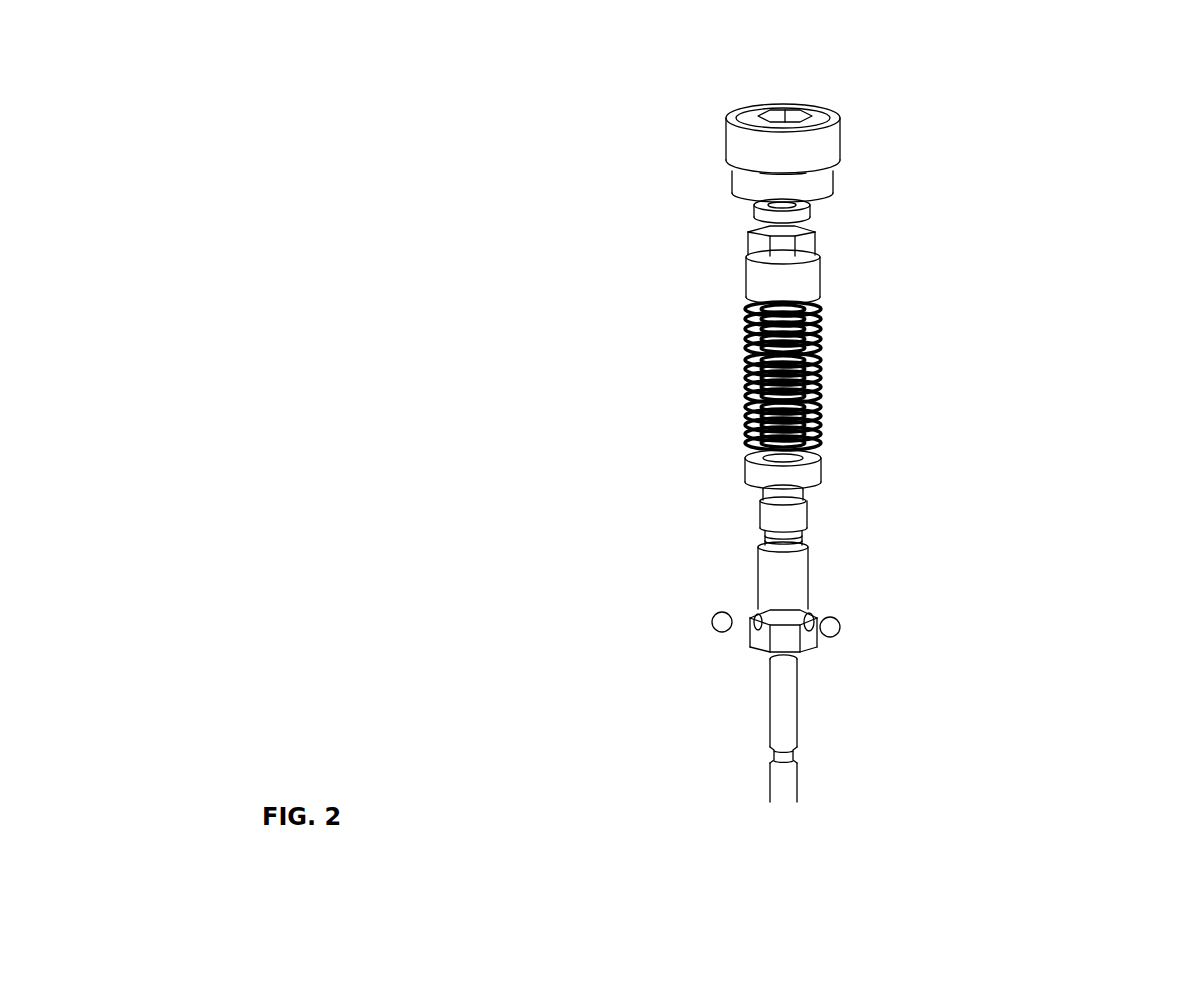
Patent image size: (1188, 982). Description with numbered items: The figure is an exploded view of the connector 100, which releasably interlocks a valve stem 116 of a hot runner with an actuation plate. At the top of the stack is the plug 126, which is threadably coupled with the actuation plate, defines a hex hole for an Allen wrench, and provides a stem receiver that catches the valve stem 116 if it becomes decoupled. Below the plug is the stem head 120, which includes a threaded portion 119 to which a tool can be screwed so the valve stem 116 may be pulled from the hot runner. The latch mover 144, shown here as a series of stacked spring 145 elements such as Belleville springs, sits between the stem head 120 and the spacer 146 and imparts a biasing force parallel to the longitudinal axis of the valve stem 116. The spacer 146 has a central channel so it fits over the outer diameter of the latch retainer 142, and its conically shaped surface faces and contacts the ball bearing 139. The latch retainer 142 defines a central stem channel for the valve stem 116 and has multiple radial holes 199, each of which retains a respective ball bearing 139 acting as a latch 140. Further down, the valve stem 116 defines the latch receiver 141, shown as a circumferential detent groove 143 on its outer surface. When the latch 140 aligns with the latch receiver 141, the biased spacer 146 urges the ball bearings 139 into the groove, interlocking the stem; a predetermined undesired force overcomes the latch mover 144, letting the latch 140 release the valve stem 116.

The connector 100 is at (668, 84).
The plug 126 is at (843, 152).
The threaded portion 119 is at (842, 213).
The stem head 120 is at (822, 268).
The latch mover 144 is at (945, 356).
The spring 145 is at (822, 377).
The spacer 146 is at (822, 468).
The latch retainer 142 is at (805, 587).
The radial hole 199 is at (758, 618).
The ball bearing 139 is at (712, 623).
The latch 140 is at (508, 499).
The latch receiver 141 is at (649, 748).
The detent groove 143 is at (772, 752).
The valve stem 116 is at (798, 728).